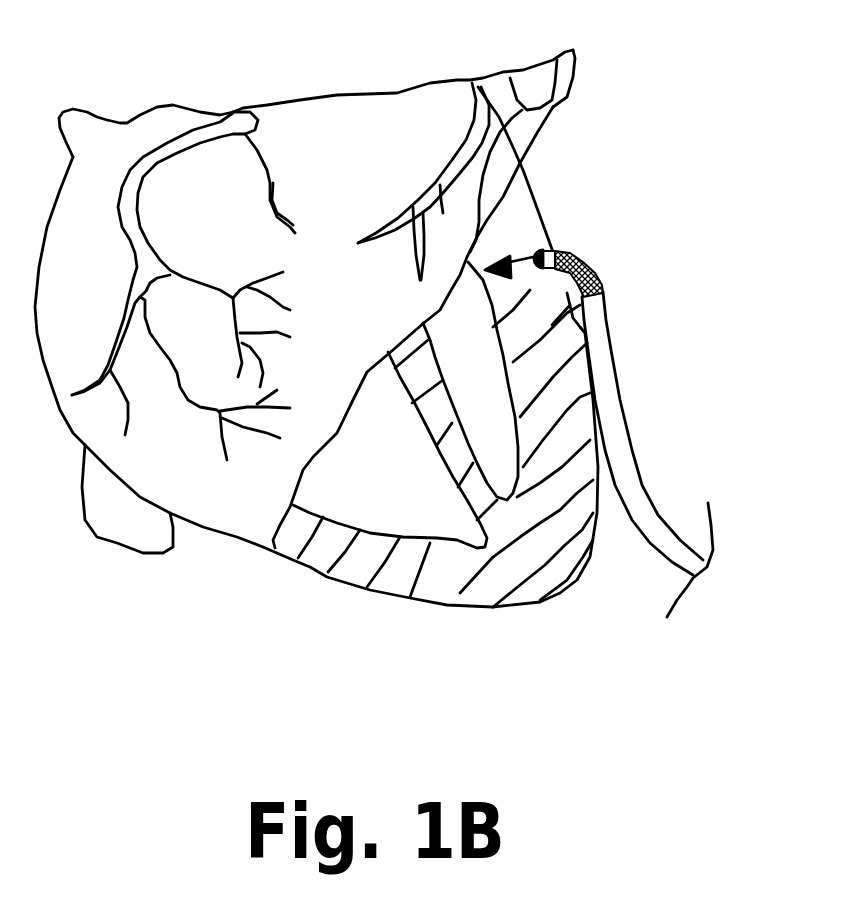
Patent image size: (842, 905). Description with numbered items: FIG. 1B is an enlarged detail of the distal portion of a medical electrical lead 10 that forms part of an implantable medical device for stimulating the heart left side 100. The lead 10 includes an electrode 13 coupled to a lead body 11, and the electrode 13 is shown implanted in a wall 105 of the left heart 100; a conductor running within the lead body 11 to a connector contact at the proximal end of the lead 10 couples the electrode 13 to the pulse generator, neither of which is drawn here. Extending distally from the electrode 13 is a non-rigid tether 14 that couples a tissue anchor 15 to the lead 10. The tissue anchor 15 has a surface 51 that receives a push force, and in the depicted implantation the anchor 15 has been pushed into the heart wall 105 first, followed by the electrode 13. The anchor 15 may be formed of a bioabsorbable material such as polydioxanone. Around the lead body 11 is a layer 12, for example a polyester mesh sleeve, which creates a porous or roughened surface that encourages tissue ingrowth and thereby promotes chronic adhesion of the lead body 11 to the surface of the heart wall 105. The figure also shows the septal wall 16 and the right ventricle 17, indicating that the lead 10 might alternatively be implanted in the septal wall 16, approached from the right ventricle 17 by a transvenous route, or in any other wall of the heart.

The medical electrical lead 10 is at (599, 379).
The lead body 11 is at (610, 370).
The layer 12 is at (603, 276).
The electrode 13 is at (537, 250).
The non-rigid tether 14 is at (512, 262).
The tissue anchor 15 is at (563, 62).
The septal wall 16 is at (436, 391).
The right ventricle 17 is at (422, 513).
The surface 51 is at (497, 263).
The heart left side 100 is at (345, 350).
The wall 105 is at (553, 326).